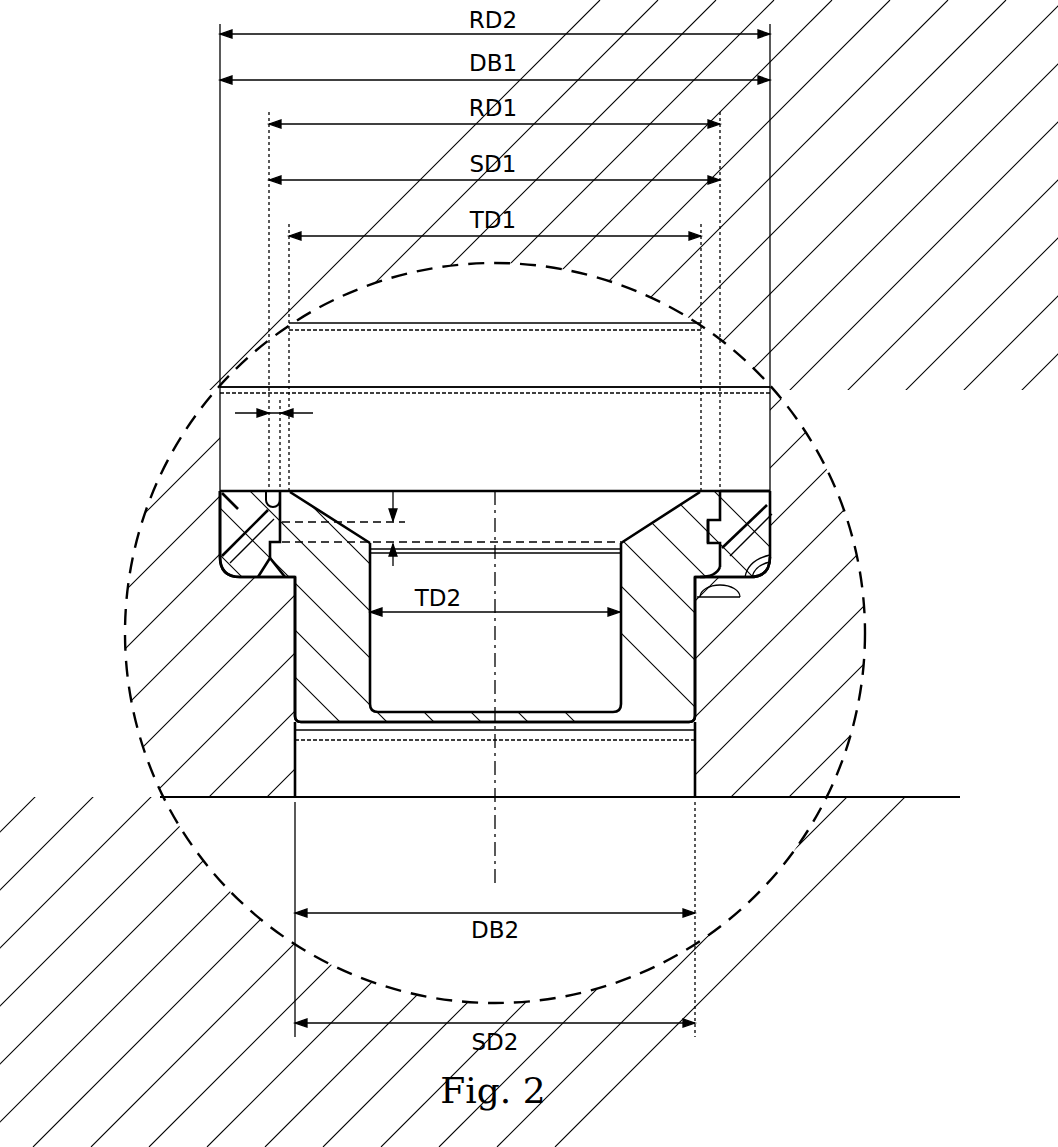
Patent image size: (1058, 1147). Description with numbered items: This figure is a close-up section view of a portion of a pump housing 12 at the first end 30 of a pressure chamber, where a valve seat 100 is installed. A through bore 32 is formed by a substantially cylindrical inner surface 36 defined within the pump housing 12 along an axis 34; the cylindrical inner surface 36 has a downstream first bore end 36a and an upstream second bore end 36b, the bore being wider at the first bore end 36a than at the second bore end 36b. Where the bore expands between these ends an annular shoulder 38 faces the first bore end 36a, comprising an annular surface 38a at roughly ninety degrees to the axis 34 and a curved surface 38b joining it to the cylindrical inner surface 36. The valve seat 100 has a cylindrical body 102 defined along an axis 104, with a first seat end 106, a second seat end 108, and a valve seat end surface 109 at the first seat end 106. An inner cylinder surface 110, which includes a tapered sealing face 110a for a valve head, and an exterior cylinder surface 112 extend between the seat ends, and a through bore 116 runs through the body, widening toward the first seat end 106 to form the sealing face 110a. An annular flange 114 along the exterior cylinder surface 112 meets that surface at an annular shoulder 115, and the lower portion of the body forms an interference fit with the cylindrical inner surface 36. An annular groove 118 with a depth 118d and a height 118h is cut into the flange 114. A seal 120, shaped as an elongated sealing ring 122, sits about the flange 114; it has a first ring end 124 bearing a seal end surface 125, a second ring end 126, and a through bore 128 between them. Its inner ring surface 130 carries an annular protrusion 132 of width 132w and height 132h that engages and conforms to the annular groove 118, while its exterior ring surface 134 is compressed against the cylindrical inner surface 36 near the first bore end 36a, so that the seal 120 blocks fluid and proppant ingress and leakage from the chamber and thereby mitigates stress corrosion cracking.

The pump housing 12 is at (845, 650).
The first end 30 is at (460, 356).
The through bore 32 is at (298, 798).
The axis 34 is at (497, 868).
The cylindrical inner surface 36 is at (697, 760).
The first bore end 36a is at (240, 386).
The second bore end 36b is at (297, 760).
The annular shoulder 38 is at (703, 620).
The annular surface 38a is at (712, 610).
The curved surface 38b is at (752, 585).
The valve seat 100 is at (504, 486).
The cylindrical body 102 is at (620, 640).
The axis 104 is at (495, 640).
The first seat end 106 is at (710, 490).
The second seat end 108 is at (648, 724).
The valve seat end surface 109 is at (477, 490).
The inner cylinder surface 110 is at (372, 670).
The tapered sealing face 110a is at (617, 531).
The exterior cylinder surface 112 is at (697, 690).
The annular flange 114 is at (300, 509).
The annular shoulder 115 is at (300, 612).
The through bore 116 is at (518, 700).
The annular groove 118 is at (682, 528).
The depth 118d is at (305, 410).
The height 118h is at (395, 496).
The seal 120 is at (758, 500).
The sealing ring 122 is at (248, 536).
The first ring end 124 is at (268, 515).
The seal end surface 125 is at (232, 498).
The second ring end 126 is at (240, 590).
The through bore 128 is at (698, 492).
The inner ring surface 130 is at (712, 560).
The annular protrusion 132 is at (737, 532).
The height 132h is at (232, 580).
The width 132w is at (228, 548).
The exterior ring surface 134 is at (773, 523).